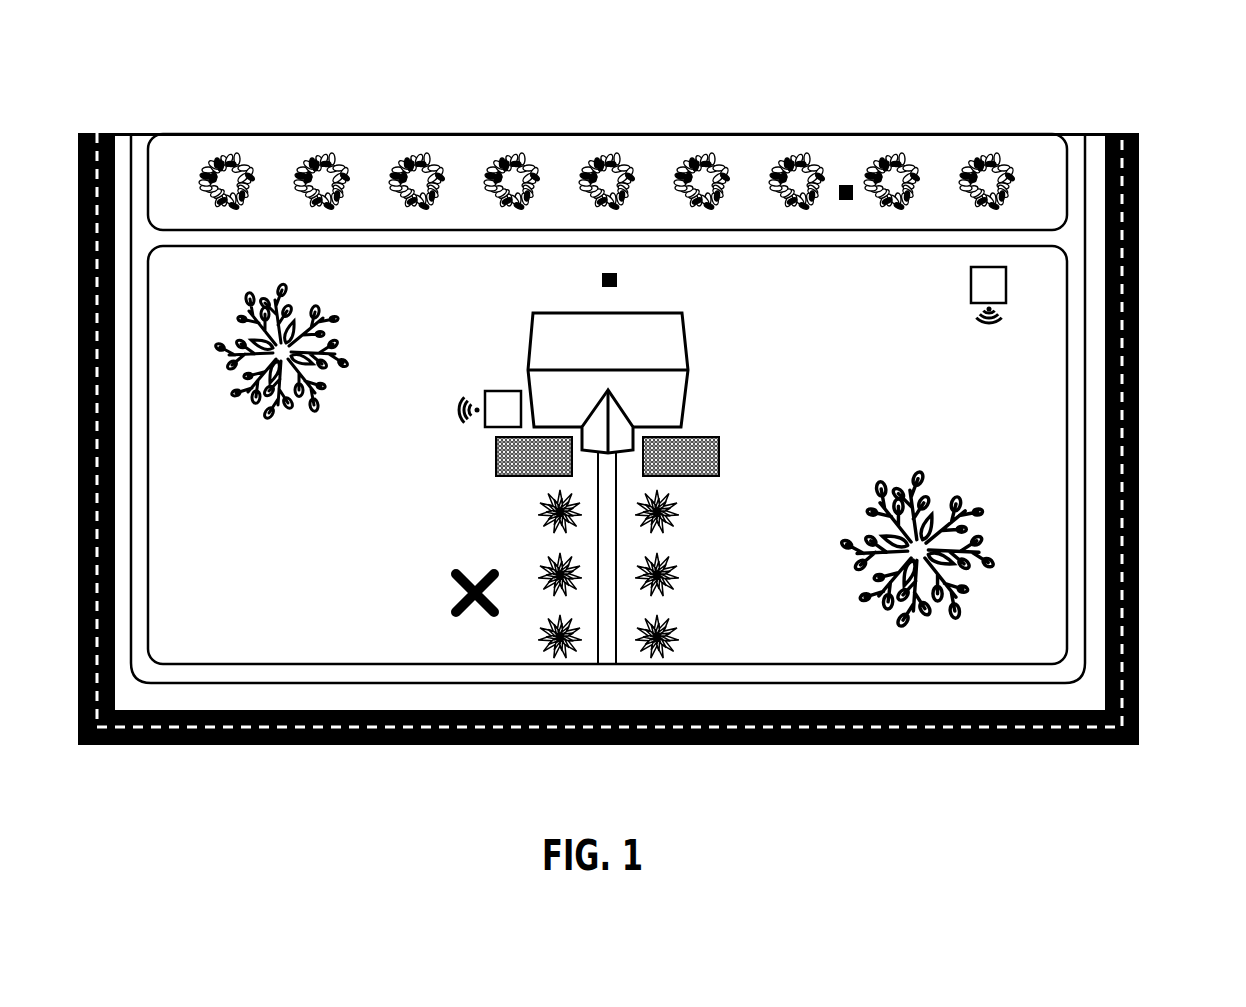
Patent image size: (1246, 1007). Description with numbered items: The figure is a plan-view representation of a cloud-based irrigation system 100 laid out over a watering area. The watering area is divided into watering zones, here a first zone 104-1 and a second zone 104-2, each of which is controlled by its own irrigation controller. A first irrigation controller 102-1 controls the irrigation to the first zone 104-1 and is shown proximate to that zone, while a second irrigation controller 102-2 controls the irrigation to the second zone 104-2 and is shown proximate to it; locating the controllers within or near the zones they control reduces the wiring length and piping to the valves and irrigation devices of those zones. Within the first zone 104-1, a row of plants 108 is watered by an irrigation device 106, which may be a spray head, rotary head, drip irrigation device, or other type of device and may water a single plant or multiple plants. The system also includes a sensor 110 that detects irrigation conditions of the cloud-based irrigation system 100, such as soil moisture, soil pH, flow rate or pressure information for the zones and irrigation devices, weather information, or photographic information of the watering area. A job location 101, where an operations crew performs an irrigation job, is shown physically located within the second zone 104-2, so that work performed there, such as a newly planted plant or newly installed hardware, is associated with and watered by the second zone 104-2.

The cloud-based irrigation system 100 is at (1141, 72).
The job location 101 is at (462, 596).
The first irrigation controller 102-1 is at (971, 276).
The second irrigation controller 102-2 is at (503, 391).
The first zone 104-1 is at (941, 174).
The second zone 104-2 is at (503, 526).
The irrigation device 106 is at (850, 185).
The plants 108 is at (706, 190).
The sensor 110 is at (602, 280).